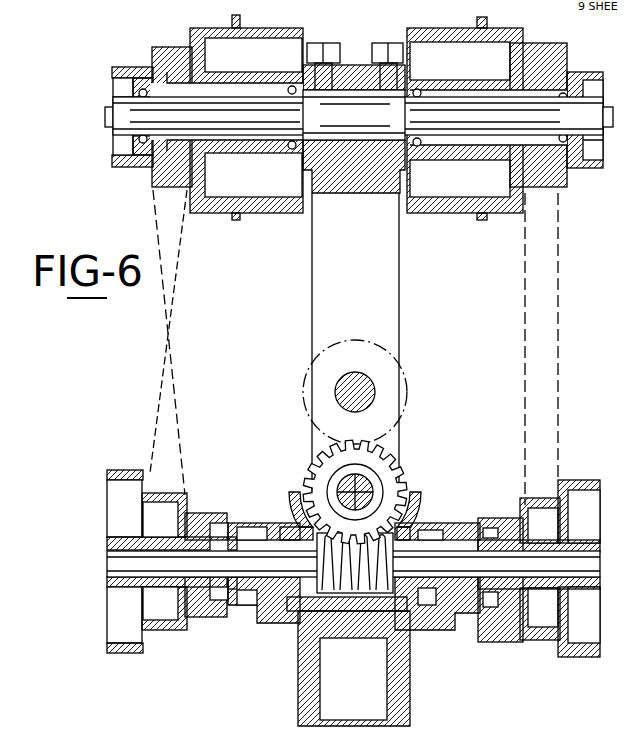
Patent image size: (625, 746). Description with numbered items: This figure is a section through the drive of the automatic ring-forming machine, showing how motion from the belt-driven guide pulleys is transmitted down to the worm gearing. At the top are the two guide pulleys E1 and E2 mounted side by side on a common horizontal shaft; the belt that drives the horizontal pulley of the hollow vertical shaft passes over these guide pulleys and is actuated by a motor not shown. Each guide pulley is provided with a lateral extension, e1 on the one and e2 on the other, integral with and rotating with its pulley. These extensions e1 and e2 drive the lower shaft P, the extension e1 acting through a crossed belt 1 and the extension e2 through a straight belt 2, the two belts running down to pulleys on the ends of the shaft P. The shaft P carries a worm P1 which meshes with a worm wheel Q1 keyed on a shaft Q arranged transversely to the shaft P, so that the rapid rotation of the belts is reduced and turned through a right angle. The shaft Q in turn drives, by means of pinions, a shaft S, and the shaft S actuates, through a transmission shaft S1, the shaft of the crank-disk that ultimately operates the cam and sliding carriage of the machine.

The lateral extension e1 is at (161, 50).
The guide pulley E1 is at (303, 30).
The guide pulley E2 is at (420, 55).
The lateral extension e2 is at (553, 52).
The crossed belt 1 is at (160, 410).
The straight belt 2 is at (525, 345).
The shaft S is at (336, 400).
The transmission shaft S1 is at (432, 348).
The shaft Q is at (337, 483).
The worm wheel Q1 is at (398, 469).
The shaft P is at (252, 560).
The worm P1 is at (357, 638).